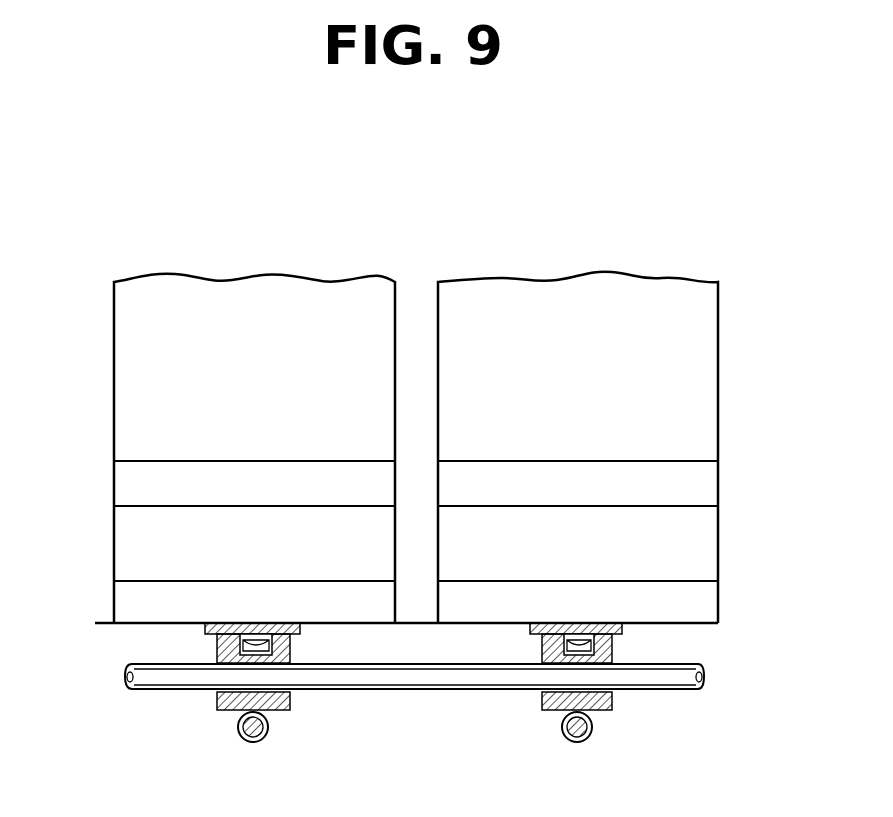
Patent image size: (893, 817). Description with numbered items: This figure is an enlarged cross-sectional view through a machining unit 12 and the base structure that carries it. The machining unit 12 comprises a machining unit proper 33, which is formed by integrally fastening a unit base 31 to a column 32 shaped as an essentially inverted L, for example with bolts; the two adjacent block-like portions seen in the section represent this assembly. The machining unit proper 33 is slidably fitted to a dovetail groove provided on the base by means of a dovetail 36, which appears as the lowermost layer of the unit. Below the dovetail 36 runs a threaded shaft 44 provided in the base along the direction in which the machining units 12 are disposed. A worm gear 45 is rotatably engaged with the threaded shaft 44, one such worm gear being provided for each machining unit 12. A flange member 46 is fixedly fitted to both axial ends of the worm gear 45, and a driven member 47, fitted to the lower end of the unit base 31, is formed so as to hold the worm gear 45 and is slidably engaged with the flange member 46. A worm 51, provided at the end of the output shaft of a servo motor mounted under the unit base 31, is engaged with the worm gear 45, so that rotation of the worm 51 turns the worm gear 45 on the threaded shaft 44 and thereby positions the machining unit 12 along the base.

The machining unit 12 is at (468, 266).
The machining unit proper 33 is at (136, 326).
The column 32 is at (697, 328).
The unit base 31 is at (703, 540).
The dovetail 36 is at (698, 602).
The driven member 47 is at (206, 627).
The worm gear 45 is at (270, 698).
The threaded shaft 44 is at (443, 677).
The flange member 46 is at (221, 710).
The worm 51 is at (258, 742).